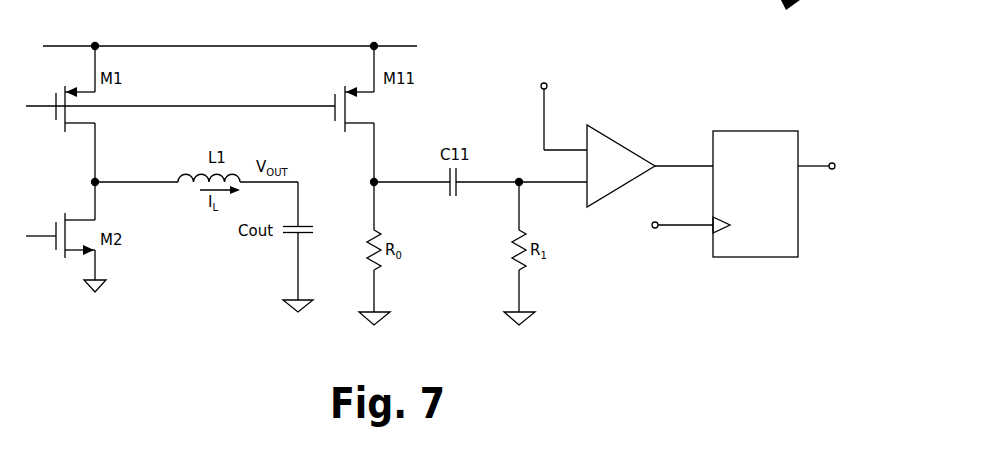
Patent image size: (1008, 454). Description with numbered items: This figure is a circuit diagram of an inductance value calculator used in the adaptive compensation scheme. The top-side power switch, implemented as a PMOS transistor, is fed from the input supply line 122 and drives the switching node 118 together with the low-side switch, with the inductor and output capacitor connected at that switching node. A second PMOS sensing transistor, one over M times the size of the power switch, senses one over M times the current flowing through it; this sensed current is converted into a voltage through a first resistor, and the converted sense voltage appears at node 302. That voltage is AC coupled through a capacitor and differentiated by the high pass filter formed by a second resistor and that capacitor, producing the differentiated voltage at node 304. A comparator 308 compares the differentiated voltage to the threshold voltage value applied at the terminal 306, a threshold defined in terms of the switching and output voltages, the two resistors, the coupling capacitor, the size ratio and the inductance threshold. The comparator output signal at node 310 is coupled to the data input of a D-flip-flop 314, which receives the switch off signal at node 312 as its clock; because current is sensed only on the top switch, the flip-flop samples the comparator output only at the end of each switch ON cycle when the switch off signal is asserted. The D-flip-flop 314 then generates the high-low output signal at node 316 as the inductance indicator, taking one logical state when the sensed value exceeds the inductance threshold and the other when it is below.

The switching node V_SW 118 is at (92, 182).
The input voltage supply line V_in 122 is at (236, 44).
The node 302 is at (369, 182).
The difference voltage node V_diff 304 is at (517, 186).
The threshold input terminal 306 is at (547, 97).
The comparator 308 is at (623, 146).
The node 310 is at (686, 168).
The node 312 is at (692, 229).
The D-flip-flop 314 is at (737, 259).
The node 316 is at (809, 169).